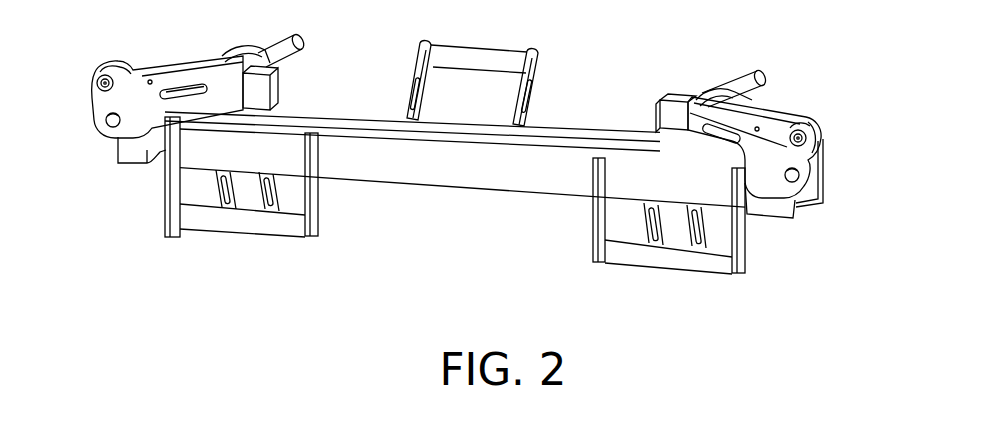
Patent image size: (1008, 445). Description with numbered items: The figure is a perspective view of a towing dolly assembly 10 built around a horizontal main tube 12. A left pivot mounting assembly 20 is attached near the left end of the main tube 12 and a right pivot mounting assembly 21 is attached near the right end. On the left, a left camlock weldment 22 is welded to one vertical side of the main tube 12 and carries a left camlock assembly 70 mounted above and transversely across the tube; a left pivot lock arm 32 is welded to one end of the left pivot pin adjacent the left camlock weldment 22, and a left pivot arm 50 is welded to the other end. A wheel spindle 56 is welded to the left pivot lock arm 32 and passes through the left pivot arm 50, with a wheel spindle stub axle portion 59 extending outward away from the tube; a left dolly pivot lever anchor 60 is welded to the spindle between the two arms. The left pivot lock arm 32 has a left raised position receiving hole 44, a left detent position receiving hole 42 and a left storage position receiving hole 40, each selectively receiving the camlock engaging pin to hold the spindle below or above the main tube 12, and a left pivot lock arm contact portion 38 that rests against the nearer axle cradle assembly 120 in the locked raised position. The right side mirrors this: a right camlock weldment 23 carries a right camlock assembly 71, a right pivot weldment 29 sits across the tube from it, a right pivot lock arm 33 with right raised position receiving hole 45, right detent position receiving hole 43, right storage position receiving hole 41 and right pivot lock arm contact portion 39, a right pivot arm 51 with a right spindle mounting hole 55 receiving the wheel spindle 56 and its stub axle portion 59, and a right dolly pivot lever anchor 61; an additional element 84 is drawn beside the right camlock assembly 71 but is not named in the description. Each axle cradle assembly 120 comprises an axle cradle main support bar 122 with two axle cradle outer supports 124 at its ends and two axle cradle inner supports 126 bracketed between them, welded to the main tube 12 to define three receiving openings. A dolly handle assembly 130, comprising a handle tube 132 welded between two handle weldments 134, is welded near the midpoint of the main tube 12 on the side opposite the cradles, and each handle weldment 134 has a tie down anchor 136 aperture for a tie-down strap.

The towing dolly assembly 10 is at (599, 88).
The main tube 12 is at (482, 181).
The left pivot mounting assembly 20 is at (175, 47).
The right pivot mounting assembly 21 is at (725, 56).
The left camlock weldment 22 is at (130, 155).
The right camlock weldment 23 is at (780, 211).
The right pivot weldment 29 is at (823, 199).
The left pivot lock arm 32 is at (127, 105).
The right pivot lock arm 33 is at (758, 158).
The left pivot lock arm contact portion 38 is at (213, 68).
The right pivot lock arm contact portion 39 is at (658, 111).
The left storage position receiving hole 40 is at (95, 70).
The right storage position receiving hole 41 is at (807, 144).
The left detent position receiving hole 42 is at (149, 79).
The right detent position receiving hole 43 is at (760, 127).
The left raised position receiving hole 44 is at (107, 131).
The right raised position receiving hole 45 is at (800, 177).
The left pivot arm 50 is at (197, 66).
The right pivot arm 51 is at (757, 107).
The right spindle mounting hole 55 is at (700, 97).
The wheel spindle 56 is at (273, 34).
The wheel spindle stub axle portion 59 is at (292, 52).
The left dolly pivot lever anchor 60 is at (278, 87).
The right dolly pivot lever anchor 61 is at (670, 99).
The left camlock assembly 70 is at (129, 58).
The right camlock assembly 71 is at (826, 118).
The washer 84 is at (833, 126).
The axle cradle assembly 120 is at (336, 236).
The axle cradle main support bar 122 is at (227, 222).
The axle cradle outer support 124 is at (177, 181).
The axle cradle inner support 126 is at (280, 212).
The dolly handle assembly 130 is at (503, 32).
The handle tube 132 is at (463, 53).
The handle weldment 134 is at (413, 72).
The tie down anchor 136 is at (425, 88).